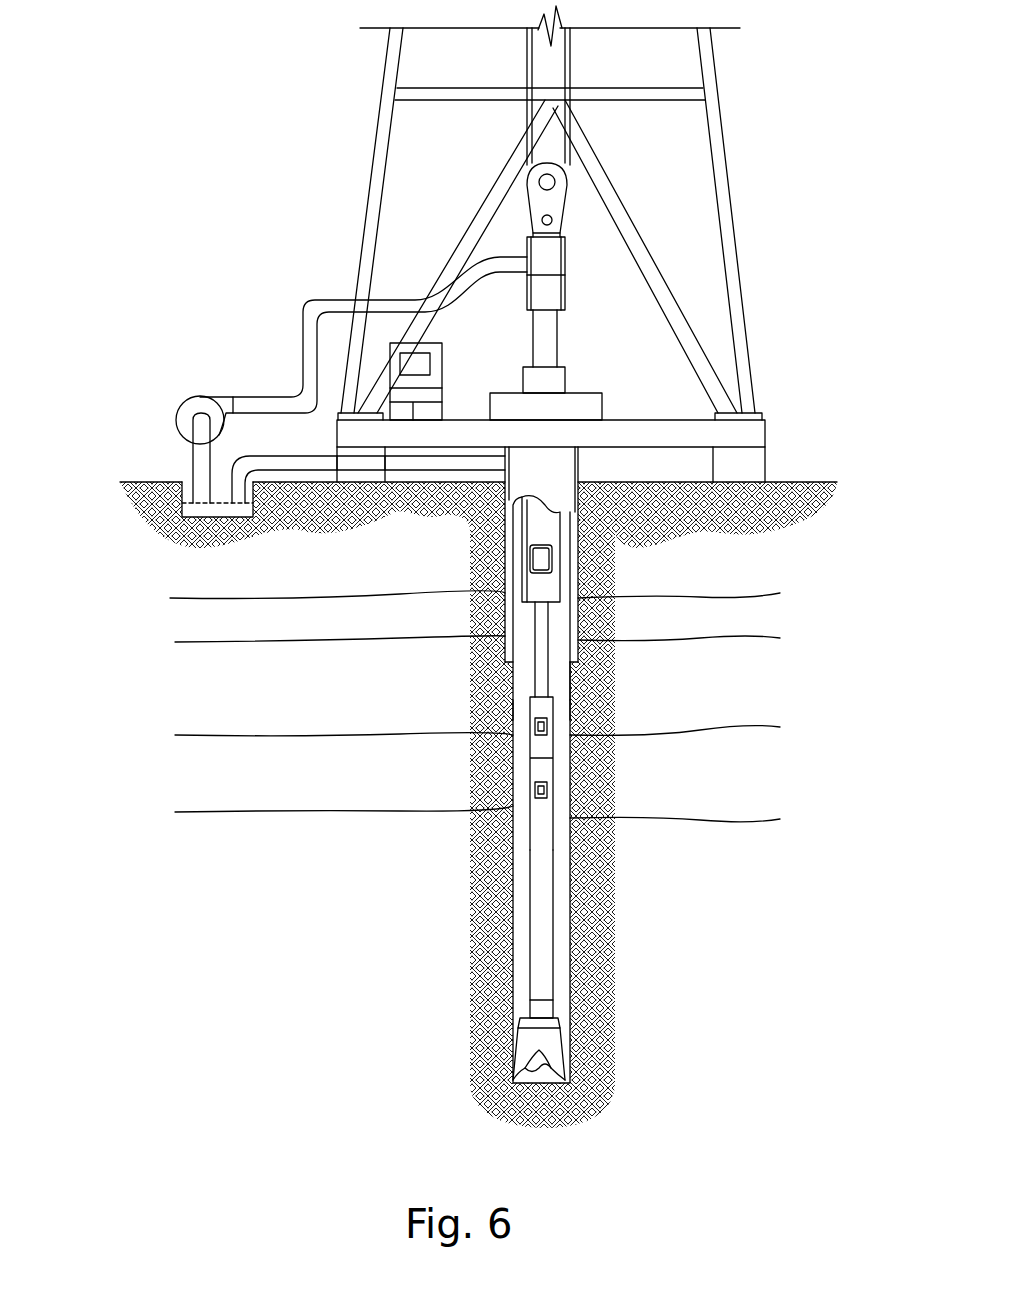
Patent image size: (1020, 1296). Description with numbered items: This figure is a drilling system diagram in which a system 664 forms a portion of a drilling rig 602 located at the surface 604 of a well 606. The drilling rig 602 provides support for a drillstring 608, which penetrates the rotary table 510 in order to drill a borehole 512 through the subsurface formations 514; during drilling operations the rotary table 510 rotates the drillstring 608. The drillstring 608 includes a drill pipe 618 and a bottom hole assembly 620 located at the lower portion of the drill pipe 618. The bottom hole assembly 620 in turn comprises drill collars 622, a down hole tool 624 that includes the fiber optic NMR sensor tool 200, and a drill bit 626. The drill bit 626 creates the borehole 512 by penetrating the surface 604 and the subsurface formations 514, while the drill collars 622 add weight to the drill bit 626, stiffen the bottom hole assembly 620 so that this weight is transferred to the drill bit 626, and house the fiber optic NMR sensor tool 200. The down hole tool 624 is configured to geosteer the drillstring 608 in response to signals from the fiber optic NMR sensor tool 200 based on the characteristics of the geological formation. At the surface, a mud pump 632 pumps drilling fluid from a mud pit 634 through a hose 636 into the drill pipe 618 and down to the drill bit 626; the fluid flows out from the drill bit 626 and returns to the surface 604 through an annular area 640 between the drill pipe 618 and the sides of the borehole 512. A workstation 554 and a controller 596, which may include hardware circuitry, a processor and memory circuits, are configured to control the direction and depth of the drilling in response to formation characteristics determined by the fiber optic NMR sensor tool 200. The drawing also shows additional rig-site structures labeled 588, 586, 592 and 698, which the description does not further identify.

The system 664 is at (259, 117).
The derrick 588 is at (717, 108).
The drilling rig 602 is at (740, 212).
The rig floor 586 is at (767, 425).
The surface 604 is at (788, 482).
The well 606 is at (584, 478).
The hose 636 is at (313, 300).
The mud pump 632 is at (208, 397).
The mud pit 634 is at (205, 518).
The control unit 592 is at (430, 341).
The workstation 554 is at (442, 357).
The controller 596 is at (431, 364).
The rotary table 510 is at (510, 393).
The rotary table 698 is at (566, 378).
The fiber optic NMR sensor tool 200 is at (547, 563).
The drill collars 622 is at (522, 543).
The drill pipe 618 is at (541, 640).
The annular area 640 is at (563, 703).
The drillstring 608 is at (554, 874).
The borehole 512 is at (570, 950).
The down hole tool 624 is at (542, 982).
The drill bit 626 is at (548, 1042).
The subsurface formations 514 is at (150, 595).
The bottom hole assembly 620 is at (470, 653).